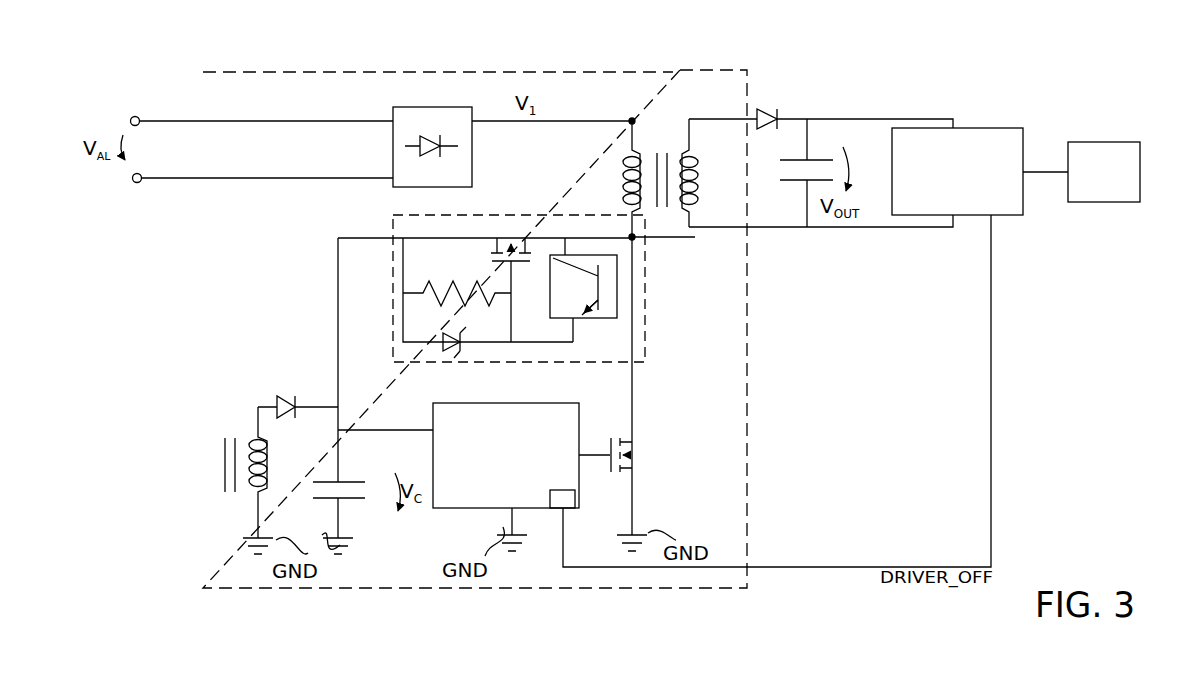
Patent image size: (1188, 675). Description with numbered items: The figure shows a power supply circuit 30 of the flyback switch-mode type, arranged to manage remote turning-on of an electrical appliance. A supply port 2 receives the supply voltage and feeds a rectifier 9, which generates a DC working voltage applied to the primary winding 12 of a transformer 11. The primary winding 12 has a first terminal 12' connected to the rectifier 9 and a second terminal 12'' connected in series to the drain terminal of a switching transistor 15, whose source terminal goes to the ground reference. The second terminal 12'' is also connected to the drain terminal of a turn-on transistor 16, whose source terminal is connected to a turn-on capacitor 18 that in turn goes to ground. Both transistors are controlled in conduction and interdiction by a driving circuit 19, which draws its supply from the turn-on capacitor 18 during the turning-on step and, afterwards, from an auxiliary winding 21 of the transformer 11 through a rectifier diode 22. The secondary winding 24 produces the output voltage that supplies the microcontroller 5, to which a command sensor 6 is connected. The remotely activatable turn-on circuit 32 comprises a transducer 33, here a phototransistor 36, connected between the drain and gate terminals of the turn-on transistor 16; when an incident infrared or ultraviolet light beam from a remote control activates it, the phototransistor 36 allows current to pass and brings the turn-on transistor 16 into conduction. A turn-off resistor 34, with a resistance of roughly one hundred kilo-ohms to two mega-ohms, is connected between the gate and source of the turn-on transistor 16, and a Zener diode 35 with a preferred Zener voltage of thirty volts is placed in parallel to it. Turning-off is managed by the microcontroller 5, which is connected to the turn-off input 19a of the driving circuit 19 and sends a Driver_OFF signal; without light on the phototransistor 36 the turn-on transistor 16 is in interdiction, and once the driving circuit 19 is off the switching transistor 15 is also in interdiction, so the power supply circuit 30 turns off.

The supply port 2 is at (158, 130).
The microcontroller 5 is at (1000, 130).
The command sensor 6 is at (1109, 147).
The rectifier 9 is at (421, 108).
The transformer 11 is at (665, 137).
The primary winding 12 is at (600, 179).
The first terminal 12' is at (600, 106).
The second terminal 12'' is at (680, 246).
The switching transistor 15 is at (628, 443).
The turn-on transistor 16 is at (497, 243).
The turn-on capacitor 18 is at (358, 480).
The driving circuit 19 is at (447, 510).
The turn-off input 19a is at (577, 497).
The auxiliary winding 21 is at (268, 437).
The rectifier diode 22 is at (288, 393).
The secondary winding 24 is at (699, 172).
The power supply circuit 30 is at (677, 71).
The turn-on circuit 32 is at (647, 319).
The transducer 33 is at (609, 312).
The turn-off resistor 34 is at (455, 300).
The Zener diode 35 is at (446, 357).
The phototransistor 36 is at (601, 268).